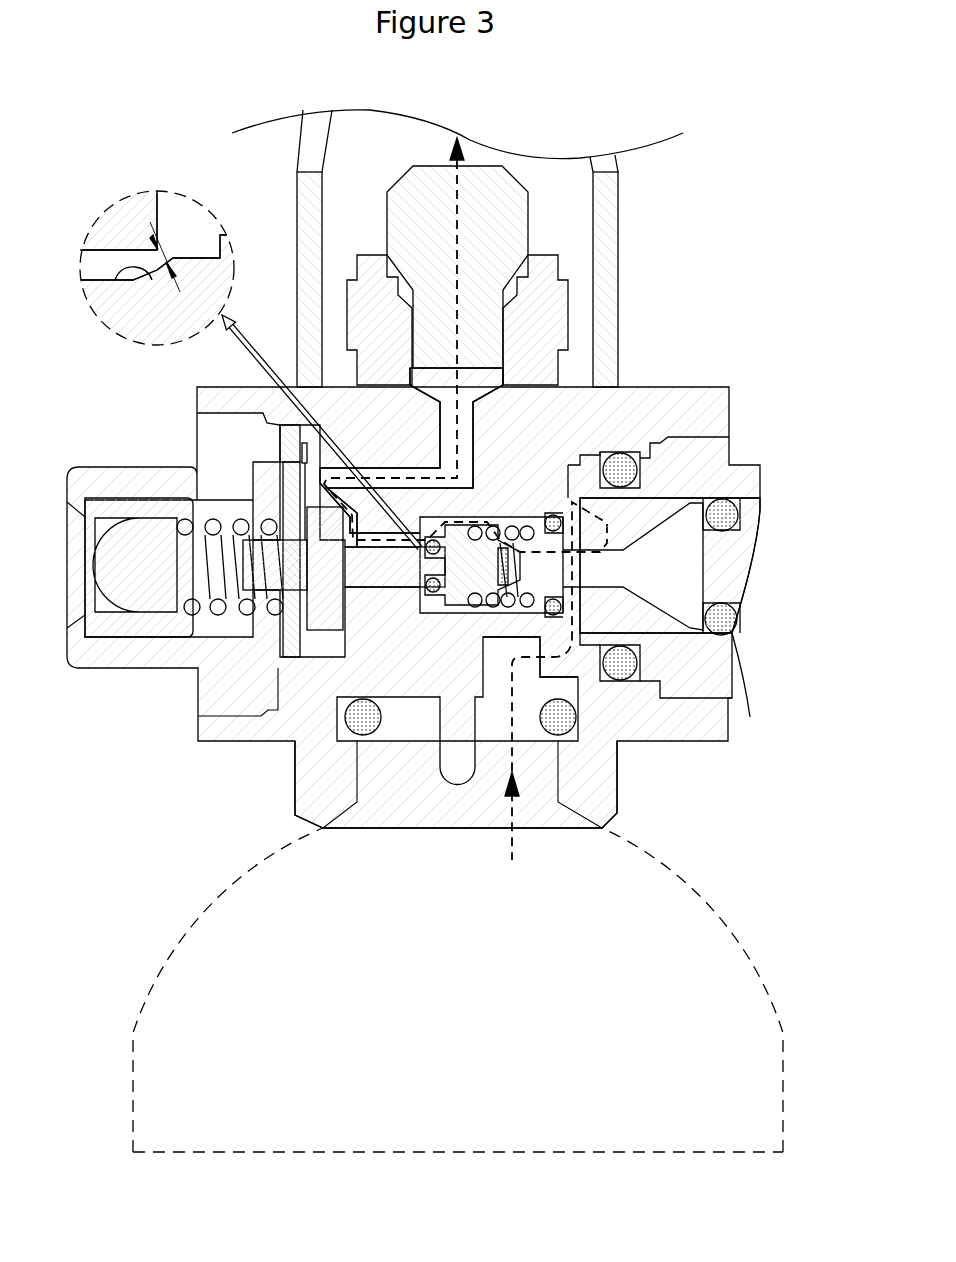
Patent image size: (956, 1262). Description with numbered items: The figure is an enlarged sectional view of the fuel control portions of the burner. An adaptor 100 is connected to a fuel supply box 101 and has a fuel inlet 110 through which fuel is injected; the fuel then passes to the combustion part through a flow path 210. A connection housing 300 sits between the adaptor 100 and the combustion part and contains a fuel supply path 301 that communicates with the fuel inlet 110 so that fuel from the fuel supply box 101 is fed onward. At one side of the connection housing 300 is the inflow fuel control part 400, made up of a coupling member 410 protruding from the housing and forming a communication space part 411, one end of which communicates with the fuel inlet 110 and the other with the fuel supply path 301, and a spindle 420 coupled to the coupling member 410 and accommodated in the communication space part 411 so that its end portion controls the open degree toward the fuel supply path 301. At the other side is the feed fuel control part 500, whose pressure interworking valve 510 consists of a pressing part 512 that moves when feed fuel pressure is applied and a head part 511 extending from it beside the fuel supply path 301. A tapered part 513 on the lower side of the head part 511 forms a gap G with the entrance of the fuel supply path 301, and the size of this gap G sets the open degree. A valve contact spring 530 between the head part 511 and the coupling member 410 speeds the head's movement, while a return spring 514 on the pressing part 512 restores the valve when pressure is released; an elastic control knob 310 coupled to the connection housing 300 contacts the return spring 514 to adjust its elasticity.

The adaptor 100 is at (600, 793).
The fuel supply box 101 is at (687, 886).
The fuel inlet 110 is at (508, 668).
The flow path 210 is at (453, 420).
The connection housing 300 is at (542, 295).
The fuel supply path 301 is at (440, 610).
The elastic control knob 310 is at (148, 555).
The inflow fuel control part 400 is at (692, 488).
The coupling member 410 is at (690, 458).
The communication space part 411 is at (612, 620).
The spindle 420 is at (692, 563).
The feed fuel control part 500 is at (290, 567).
The pressure interworking valve 510 is at (290, 549).
The head part 511 is at (432, 580).
The pressing part 512 is at (313, 575).
The tapered part 513 is at (137, 317).
The return spring 514 is at (222, 614).
The valve contact spring 530 is at (513, 478).
The gap G is at (181, 250).